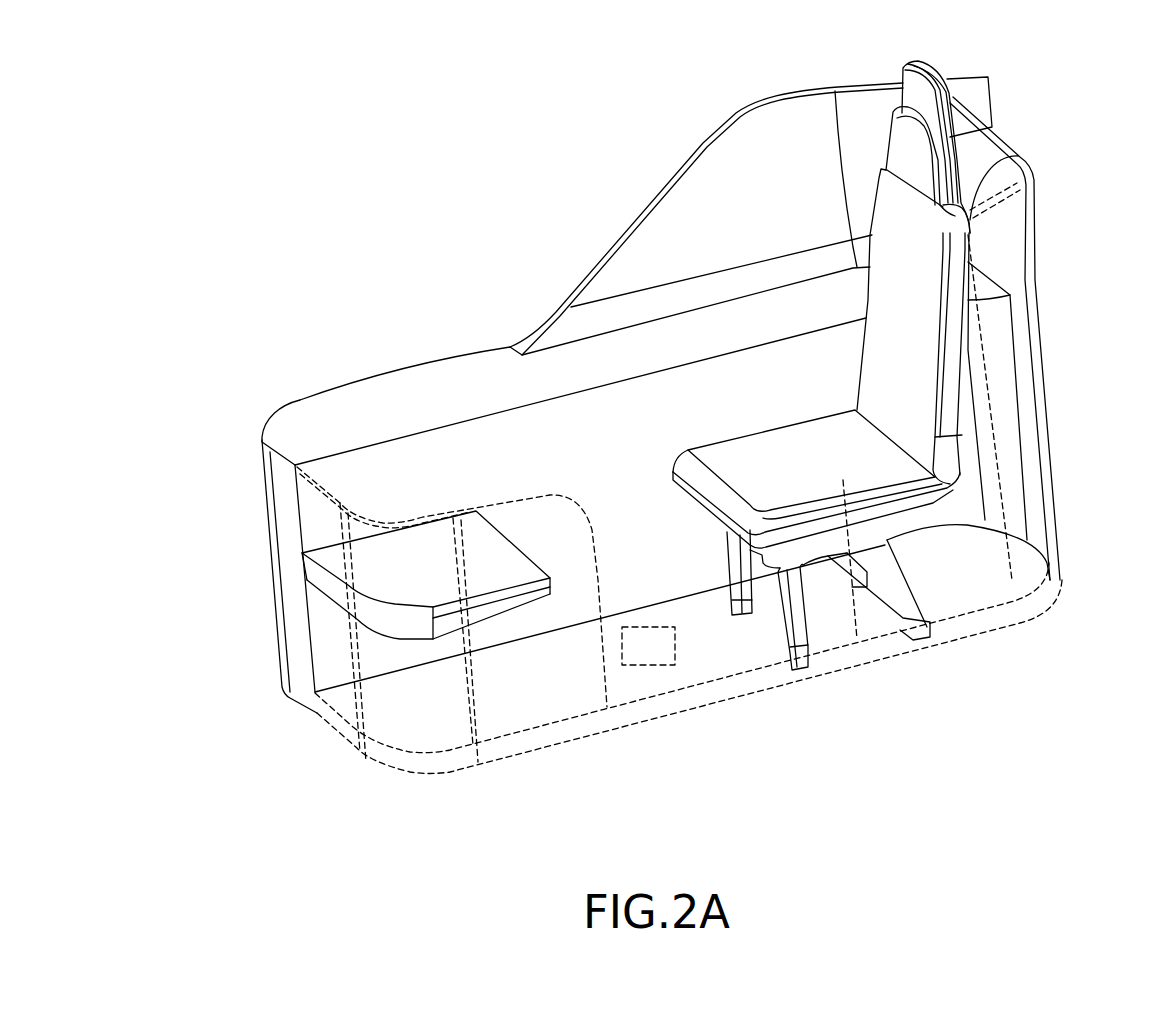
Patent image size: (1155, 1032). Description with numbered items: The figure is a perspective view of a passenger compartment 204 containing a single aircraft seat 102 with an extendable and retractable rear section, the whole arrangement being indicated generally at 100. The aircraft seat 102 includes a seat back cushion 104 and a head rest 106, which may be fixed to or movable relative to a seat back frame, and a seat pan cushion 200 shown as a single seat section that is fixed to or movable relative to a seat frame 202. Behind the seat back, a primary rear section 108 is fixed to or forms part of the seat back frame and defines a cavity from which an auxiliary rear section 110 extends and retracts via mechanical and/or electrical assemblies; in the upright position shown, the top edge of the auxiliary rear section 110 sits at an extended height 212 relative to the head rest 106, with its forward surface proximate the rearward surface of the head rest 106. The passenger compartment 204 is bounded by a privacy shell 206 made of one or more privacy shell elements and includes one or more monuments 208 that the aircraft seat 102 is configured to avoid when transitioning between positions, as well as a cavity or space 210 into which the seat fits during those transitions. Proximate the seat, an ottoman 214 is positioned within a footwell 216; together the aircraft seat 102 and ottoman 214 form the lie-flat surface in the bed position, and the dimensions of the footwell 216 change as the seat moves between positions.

The vehicle seating assembly 100 is at (350, 113).
The aircraft seat 102 is at (803, 399).
The seat back cushion 104 is at (907, 217).
The head rest 106 is at (900, 157).
The primary rear section 108 is at (966, 175).
The auxiliary rear section 110 is at (920, 63).
The seat pan cushion 200 is at (737, 510).
The seat frame 202 is at (800, 665).
The passenger compartment 204 is at (384, 274).
The privacy shell 206 is at (657, 230).
The monument 208 is at (370, 395).
The cavity or space 210 is at (1008, 495).
The extended height 212 is at (992, 100).
The ottoman 214 is at (337, 560).
The footwell 216 is at (648, 646).